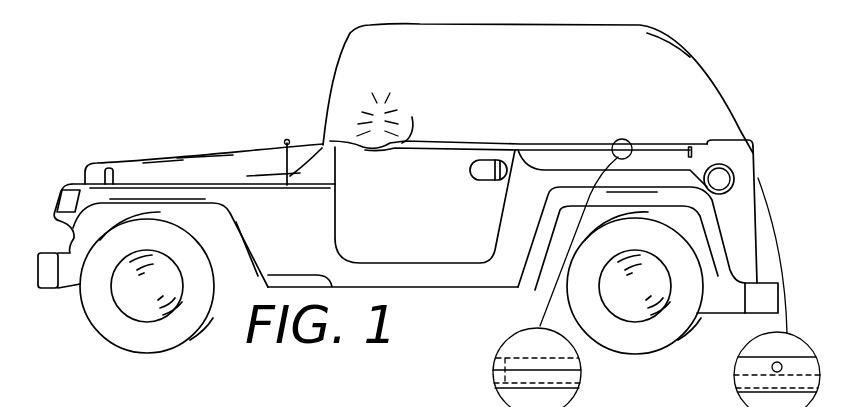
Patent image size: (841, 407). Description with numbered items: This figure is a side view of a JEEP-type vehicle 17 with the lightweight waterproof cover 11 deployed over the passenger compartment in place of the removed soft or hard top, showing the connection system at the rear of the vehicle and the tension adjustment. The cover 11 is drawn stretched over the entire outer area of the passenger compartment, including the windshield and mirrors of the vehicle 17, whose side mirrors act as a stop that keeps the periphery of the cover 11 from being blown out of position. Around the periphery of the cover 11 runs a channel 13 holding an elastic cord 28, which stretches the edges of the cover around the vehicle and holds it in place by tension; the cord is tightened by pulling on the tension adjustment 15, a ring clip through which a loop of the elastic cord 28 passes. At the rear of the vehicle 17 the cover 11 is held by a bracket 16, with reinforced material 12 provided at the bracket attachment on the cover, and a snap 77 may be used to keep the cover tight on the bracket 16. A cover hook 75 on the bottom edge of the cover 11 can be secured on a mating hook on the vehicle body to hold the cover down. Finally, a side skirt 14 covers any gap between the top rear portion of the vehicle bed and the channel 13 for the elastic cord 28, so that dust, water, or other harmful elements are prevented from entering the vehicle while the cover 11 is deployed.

The cover 11 is at (557, 85).
The reinforced material 12 is at (743, 150).
The channel 13 is at (362, 132).
The side skirt 14 is at (537, 185).
The tension adjustment 15 is at (693, 153).
The bracket 16 is at (757, 173).
The vehicle 17 is at (743, 220).
The elastic cord 28 is at (687, 155).
The cover hook 75 is at (612, 145).
The snap 77 is at (772, 367).